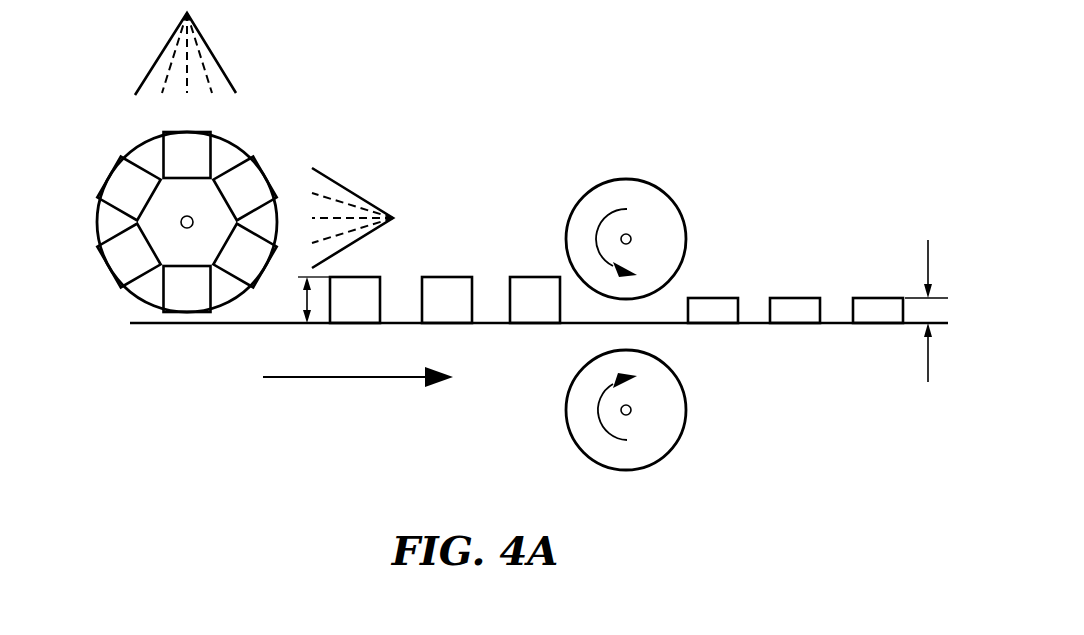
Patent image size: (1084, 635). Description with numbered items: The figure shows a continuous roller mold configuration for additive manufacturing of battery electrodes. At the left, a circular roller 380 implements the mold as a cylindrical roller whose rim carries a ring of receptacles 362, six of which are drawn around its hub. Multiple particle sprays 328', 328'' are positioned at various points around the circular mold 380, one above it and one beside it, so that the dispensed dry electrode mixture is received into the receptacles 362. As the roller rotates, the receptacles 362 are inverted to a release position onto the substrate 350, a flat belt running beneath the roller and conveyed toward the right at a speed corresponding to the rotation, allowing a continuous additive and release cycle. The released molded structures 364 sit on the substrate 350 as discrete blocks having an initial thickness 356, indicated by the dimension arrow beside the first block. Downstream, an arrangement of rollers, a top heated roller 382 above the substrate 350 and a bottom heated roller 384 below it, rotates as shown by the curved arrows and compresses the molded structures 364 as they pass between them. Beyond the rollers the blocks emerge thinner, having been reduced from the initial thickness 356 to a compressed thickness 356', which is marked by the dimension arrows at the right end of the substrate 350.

The particle spray 328' is at (246, 53).
The particle spray 328'' is at (361, 176).
The substrate 350 is at (835, 323).
The initial thickness 356 is at (259, 323).
The compressed thickness 356' is at (933, 280).
The receptacles 362 is at (270, 272).
The molded structures 364 is at (368, 277).
The circular roller mold 380 is at (145, 152).
The top heated roller 382 is at (688, 239).
The bottom heated roller 384 is at (688, 410).